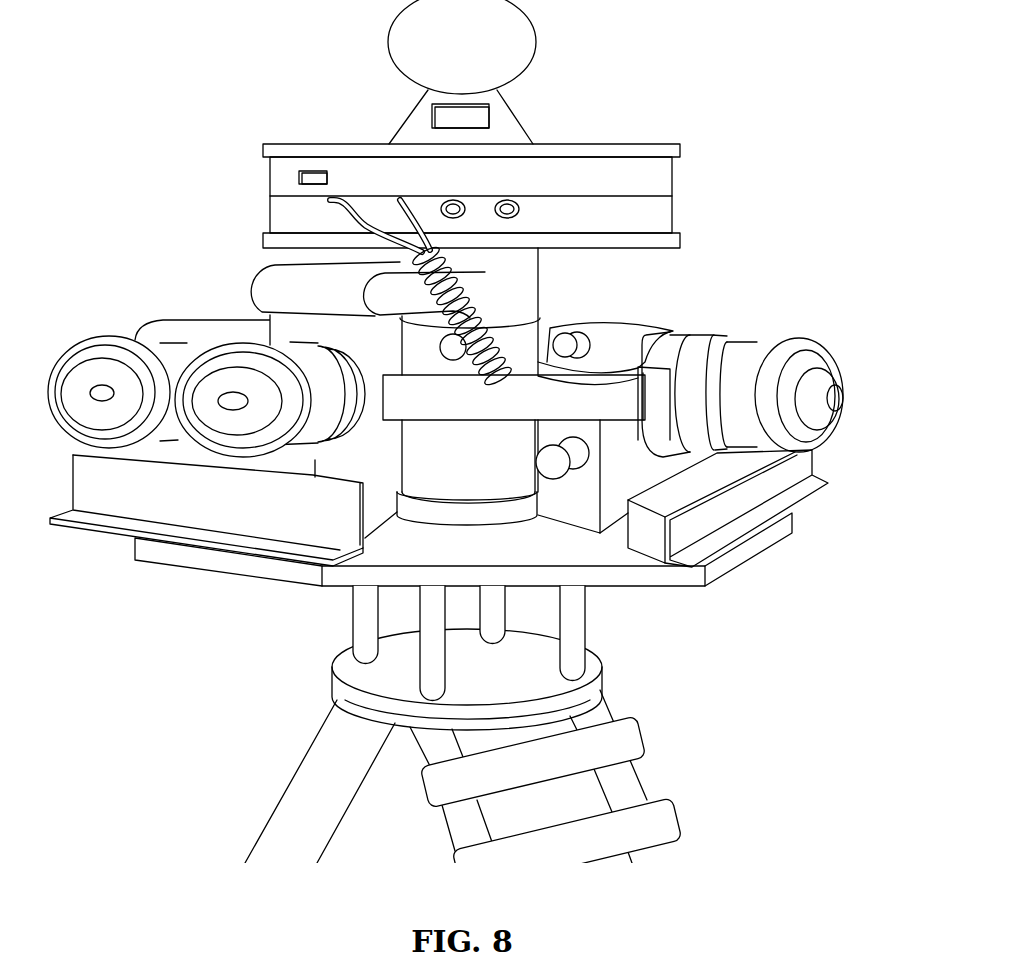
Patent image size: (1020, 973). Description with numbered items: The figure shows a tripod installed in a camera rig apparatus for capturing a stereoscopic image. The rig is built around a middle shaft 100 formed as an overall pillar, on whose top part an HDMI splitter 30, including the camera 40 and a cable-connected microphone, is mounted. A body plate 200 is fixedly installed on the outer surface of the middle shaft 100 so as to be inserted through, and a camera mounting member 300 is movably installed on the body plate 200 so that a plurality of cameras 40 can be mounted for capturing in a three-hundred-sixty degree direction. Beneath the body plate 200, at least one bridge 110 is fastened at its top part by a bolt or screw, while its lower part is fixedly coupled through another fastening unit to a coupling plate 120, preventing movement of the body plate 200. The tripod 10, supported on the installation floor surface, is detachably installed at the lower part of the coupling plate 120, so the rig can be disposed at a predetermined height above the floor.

The tripod 10 is at (694, 793).
The HDMI splitter 30 is at (662, 180).
The camera 40 is at (226, 339).
The middle shaft 100 is at (562, 284).
The bridge 110 is at (360, 610).
The coupling plate 120 is at (345, 672).
The body plate 200 is at (671, 598).
The camera mounting member 300 is at (84, 541).